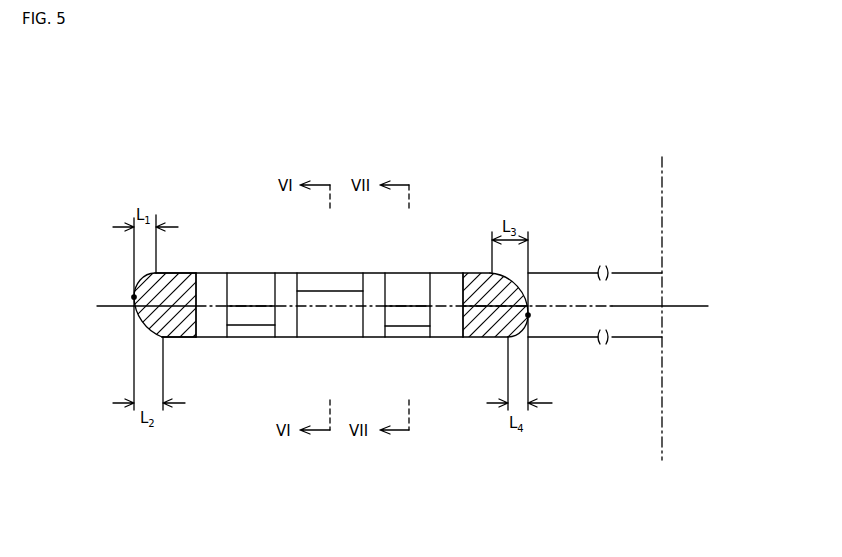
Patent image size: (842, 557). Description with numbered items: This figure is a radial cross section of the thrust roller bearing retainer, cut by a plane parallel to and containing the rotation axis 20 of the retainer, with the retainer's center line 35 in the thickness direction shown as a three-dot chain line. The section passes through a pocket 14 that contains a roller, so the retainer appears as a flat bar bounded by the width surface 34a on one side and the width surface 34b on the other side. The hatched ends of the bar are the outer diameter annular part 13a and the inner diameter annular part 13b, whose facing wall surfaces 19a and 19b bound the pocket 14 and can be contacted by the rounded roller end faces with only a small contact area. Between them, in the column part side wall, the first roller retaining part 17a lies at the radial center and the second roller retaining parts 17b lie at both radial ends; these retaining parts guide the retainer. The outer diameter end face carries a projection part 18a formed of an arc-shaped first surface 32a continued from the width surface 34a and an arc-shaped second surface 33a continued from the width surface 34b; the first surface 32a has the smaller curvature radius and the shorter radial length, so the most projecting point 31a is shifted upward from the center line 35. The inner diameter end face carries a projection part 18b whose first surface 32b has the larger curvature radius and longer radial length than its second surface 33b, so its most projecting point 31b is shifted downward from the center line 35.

The pocket 14 is at (259, 266).
The first roller retaining part 17a is at (333, 272).
The second roller retaining part 17b is at (252, 331).
The outer diameter annular part 13a is at (179, 325).
The inner diameter annular part 13b is at (482, 322).
The projection part 18a is at (82, 302).
The projection part 18b is at (548, 258).
The point 31a is at (132, 297).
The point 31b is at (531, 315).
The first surface 32a is at (148, 274).
The first surface 32b is at (522, 282).
The second surface 33a is at (147, 334).
The second surface 33b is at (522, 335).
The width surface 34a is at (188, 272).
The width surface 34b is at (190, 338).
The wall surface 19a is at (198, 297).
The wall surface 19b is at (463, 288).
The rotation axis 20 is at (662, 157).
The center line 35 is at (678, 306).